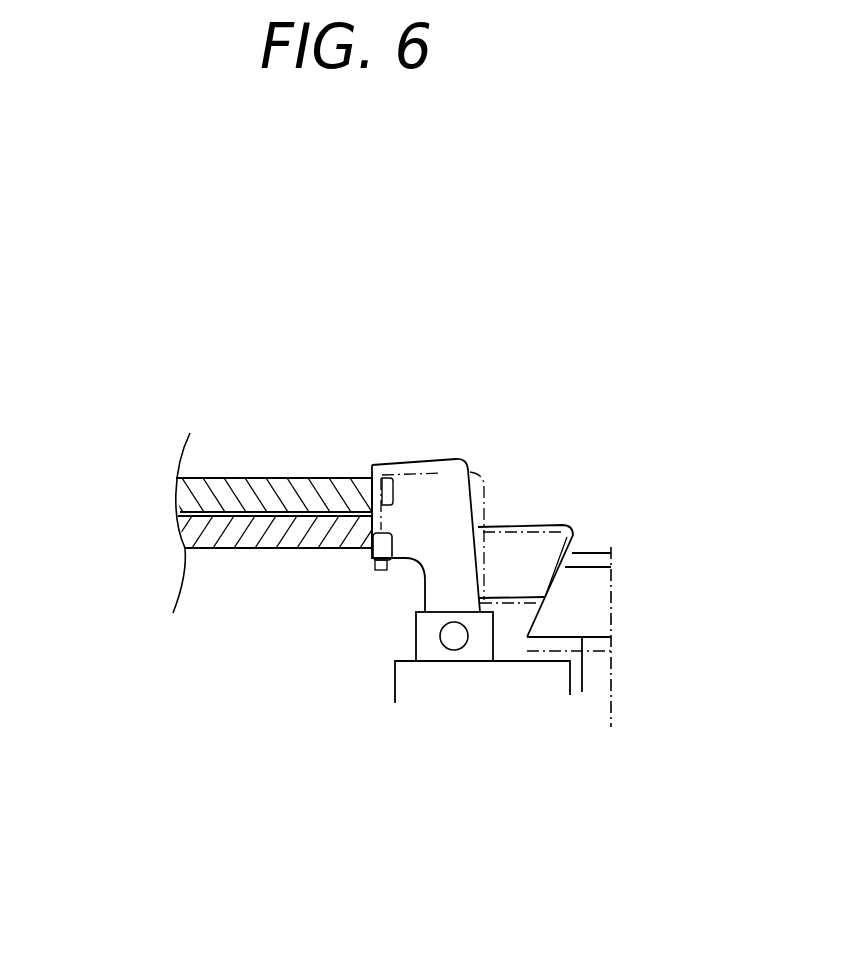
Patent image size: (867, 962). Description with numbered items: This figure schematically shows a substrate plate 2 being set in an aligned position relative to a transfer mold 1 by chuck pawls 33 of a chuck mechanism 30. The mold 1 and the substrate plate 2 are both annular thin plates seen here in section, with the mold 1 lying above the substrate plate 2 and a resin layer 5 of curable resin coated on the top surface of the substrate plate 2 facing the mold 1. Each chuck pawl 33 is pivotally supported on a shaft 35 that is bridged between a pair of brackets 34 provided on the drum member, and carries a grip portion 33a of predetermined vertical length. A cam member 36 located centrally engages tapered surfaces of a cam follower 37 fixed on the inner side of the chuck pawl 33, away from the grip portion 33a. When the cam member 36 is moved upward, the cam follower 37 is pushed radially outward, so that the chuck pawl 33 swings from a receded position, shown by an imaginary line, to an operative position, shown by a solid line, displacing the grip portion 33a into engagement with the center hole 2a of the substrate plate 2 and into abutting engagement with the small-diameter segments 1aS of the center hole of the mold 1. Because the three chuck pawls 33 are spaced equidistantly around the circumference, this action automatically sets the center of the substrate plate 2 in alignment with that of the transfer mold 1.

The transfer mold 1 is at (243, 475).
The small-diameter segments of the center hole 1aS is at (388, 485).
The substrate plate 2 is at (272, 548).
The center hole of the substrate plate 2a is at (385, 563).
The resin layer 5 is at (183, 537).
The chuck mechanism 30 is at (492, 490).
The chuck pawl 33 is at (463, 462).
The grip portion 33a is at (337, 477).
The bracket 34 is at (482, 647).
The shaft 35 is at (450, 645).
The cam member 36 is at (573, 610).
The cam follower 37 is at (548, 550).